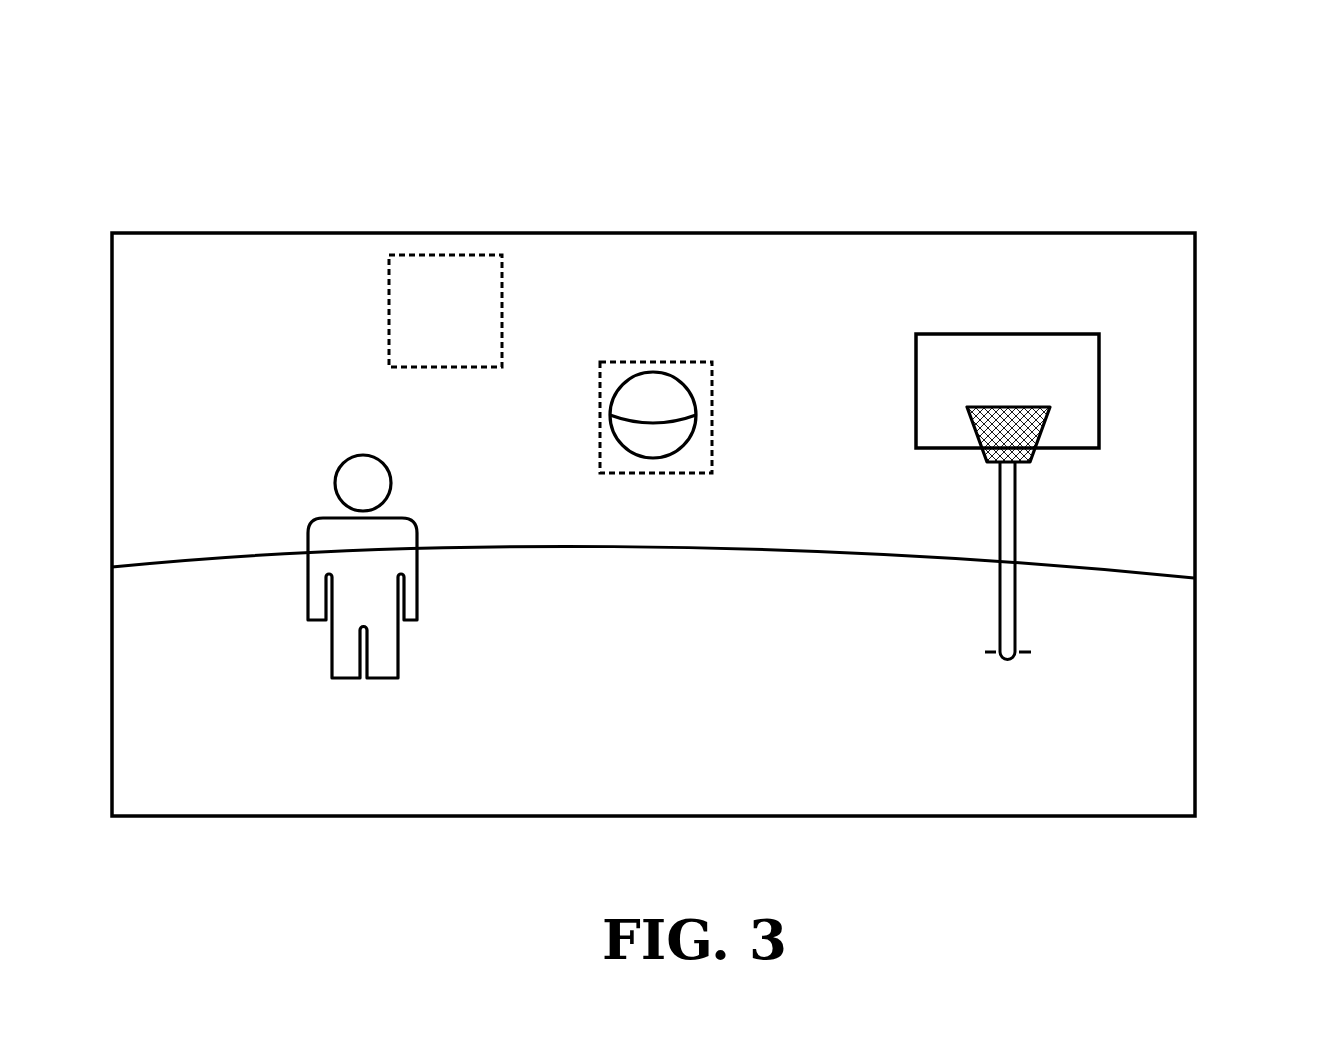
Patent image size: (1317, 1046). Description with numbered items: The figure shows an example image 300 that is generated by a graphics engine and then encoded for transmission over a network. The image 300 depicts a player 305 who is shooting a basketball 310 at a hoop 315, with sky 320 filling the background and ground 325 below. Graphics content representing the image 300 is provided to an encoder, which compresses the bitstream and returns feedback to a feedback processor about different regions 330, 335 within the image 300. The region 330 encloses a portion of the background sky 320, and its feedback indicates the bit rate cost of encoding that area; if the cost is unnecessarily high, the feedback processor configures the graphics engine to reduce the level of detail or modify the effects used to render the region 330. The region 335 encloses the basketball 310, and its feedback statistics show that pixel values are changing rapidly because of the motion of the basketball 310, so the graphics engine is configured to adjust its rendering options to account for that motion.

The image 300 is at (1203, 91).
The player 305 is at (345, 680).
The basketball 310 is at (657, 458).
The hoop 315 is at (1099, 389).
The sky 320 is at (189, 289).
The ground 325 is at (184, 619).
The region 330 is at (387, 317).
The region 335 is at (600, 428).